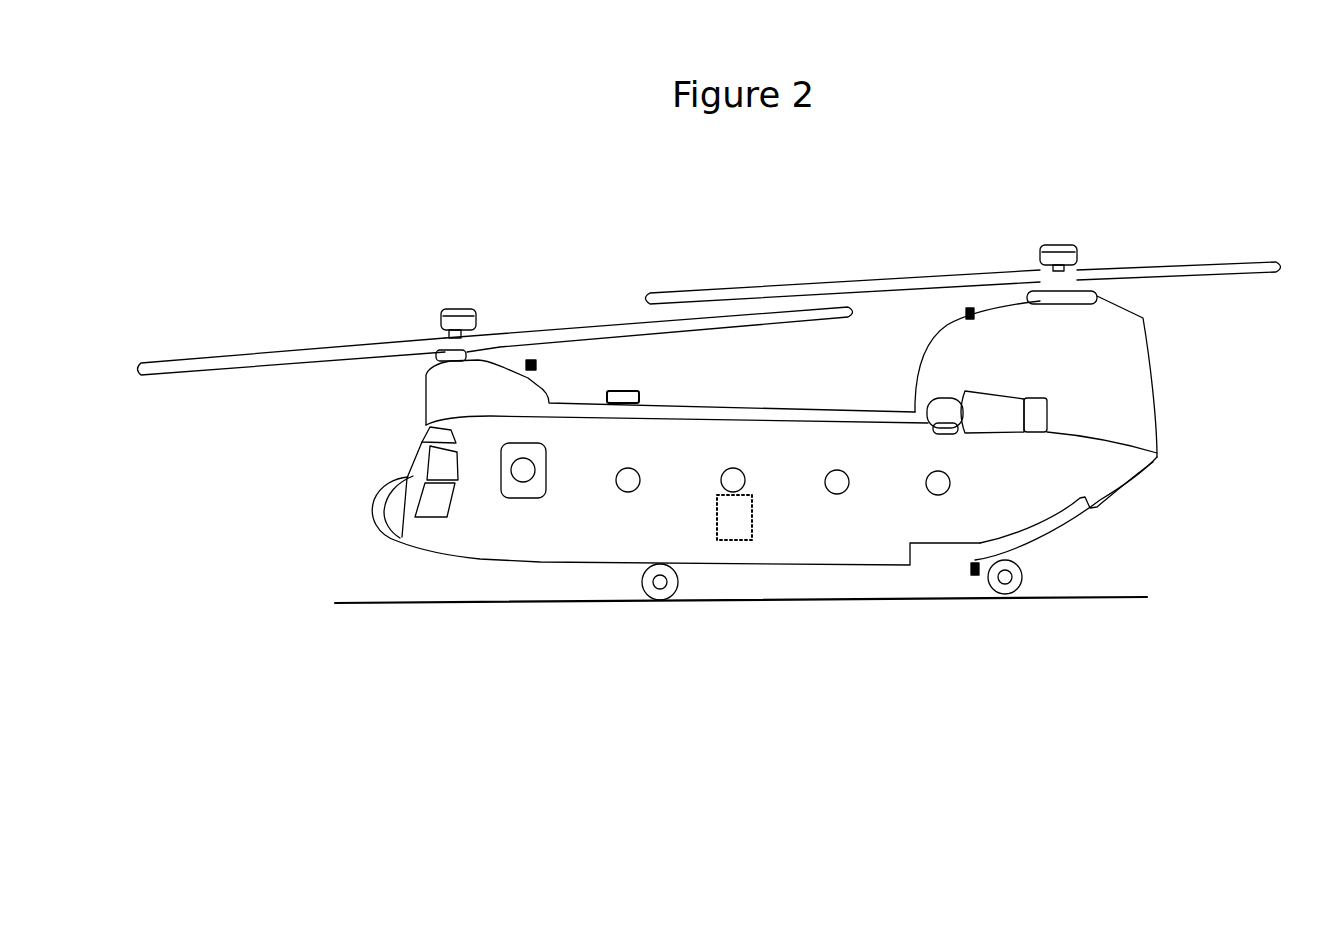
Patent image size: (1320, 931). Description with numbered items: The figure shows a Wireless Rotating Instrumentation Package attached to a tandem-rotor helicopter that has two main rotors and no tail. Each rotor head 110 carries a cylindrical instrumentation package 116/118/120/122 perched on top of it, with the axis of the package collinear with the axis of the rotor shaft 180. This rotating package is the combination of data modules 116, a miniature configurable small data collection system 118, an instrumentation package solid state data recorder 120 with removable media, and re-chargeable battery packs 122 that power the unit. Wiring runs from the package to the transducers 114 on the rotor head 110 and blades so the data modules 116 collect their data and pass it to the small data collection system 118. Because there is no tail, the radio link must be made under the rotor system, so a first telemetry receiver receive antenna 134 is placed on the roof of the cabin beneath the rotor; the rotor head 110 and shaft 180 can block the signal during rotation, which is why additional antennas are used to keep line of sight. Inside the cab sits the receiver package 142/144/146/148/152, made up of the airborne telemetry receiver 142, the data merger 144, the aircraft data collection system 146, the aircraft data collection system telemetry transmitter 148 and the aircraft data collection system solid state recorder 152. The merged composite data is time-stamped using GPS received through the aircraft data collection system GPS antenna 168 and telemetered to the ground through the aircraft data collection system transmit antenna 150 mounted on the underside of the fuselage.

The rotor head 110 is at (451, 337).
The transducers 114 is at (256, 355).
The data modules 116 is at (761, 236).
The small data collection system 118 is at (761, 236).
The instrumentation package solid state data recorder 120 is at (761, 236).
The re-chargeable battery packs 122 is at (458, 300).
The first telemetry receiver receive antenna 134 is at (536, 363).
The airborne telemetry receiver 142 is at (749, 591).
The data merger 144 is at (749, 591).
The aircraft data collection system 146 is at (749, 591).
The aircraft data collection system telemetry transmitter 148 is at (749, 591).
The aircraft data collection system solid state recorder 152 is at (733, 544).
The aircraft data collection system transmit antenna 150 is at (975, 580).
The aircraft data collection system GPS antenna 168 is at (640, 391).
The rotor shaft 180 is at (438, 366).